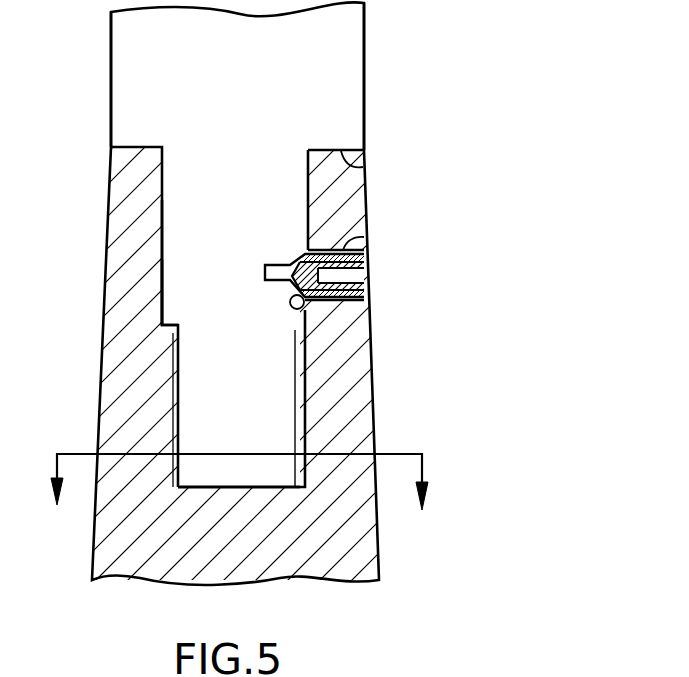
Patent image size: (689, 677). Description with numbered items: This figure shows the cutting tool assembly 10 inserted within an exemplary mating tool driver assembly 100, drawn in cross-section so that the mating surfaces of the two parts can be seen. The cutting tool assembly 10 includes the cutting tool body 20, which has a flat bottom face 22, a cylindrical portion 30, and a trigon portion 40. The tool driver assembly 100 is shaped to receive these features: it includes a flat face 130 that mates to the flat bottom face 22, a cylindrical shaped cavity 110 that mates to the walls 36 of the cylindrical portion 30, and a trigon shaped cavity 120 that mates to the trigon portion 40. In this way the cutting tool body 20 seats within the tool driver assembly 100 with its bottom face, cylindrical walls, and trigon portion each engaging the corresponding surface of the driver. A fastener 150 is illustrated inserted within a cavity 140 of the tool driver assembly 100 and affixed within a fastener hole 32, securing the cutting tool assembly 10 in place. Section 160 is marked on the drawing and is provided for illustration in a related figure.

The cutting tool assembly 10 is at (366, 35).
The cutting tool body 20 is at (352, 88).
The flat bottom face 22 is at (132, 146).
The cylindrical portion 30 is at (158, 296).
The fastener hole 32 is at (305, 313).
The walls of cylindrical portion 36 is at (158, 240).
The trigon portion 40 is at (303, 372).
The tool driver assembly 100 is at (371, 420).
The cylindrical shaped cavity 110 is at (158, 204).
The trigon shaped cavity 120 is at (177, 422).
The flat face 130 is at (362, 165).
The cavity 140 is at (360, 238).
The fastener 150 is at (364, 270).
The section 160 is at (425, 475).